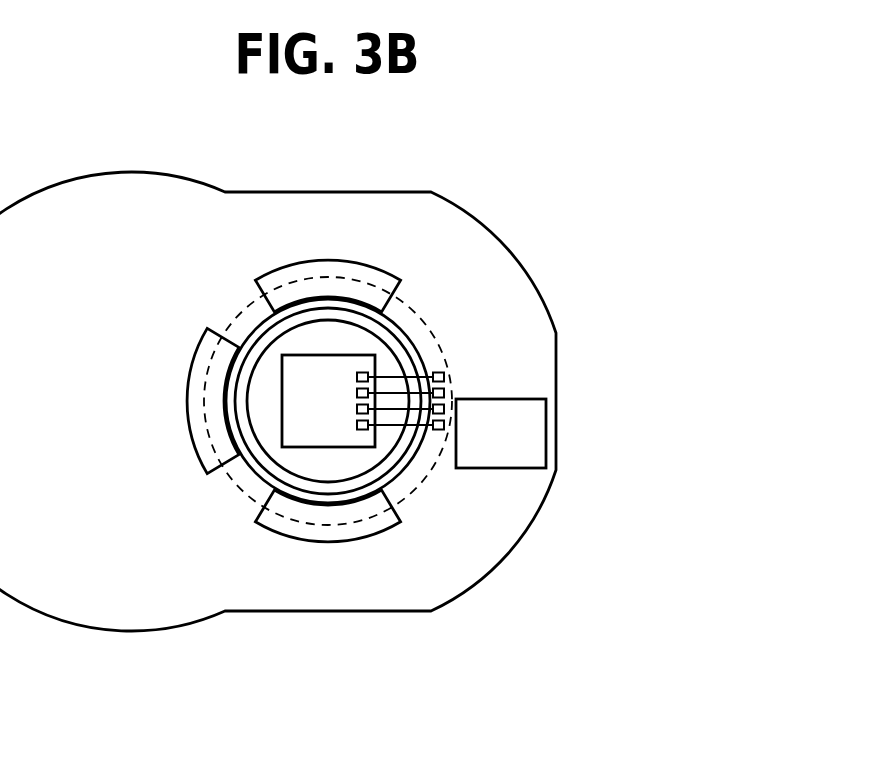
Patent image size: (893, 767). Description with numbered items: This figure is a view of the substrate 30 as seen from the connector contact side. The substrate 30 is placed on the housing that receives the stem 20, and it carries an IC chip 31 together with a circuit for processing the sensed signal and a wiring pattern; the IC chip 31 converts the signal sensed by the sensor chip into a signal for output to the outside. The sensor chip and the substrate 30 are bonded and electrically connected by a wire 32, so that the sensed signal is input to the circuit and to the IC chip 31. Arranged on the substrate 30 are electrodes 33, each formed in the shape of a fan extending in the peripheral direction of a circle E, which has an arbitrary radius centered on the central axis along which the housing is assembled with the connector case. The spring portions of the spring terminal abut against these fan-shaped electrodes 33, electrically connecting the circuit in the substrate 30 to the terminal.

The substrate 30 is at (460, 265).
The IC chip 31 is at (508, 443).
The wire 32 is at (390, 428).
The electrodes 33 is at (323, 258).
The stem 20 is at (268, 423).
The circle E is at (240, 310).